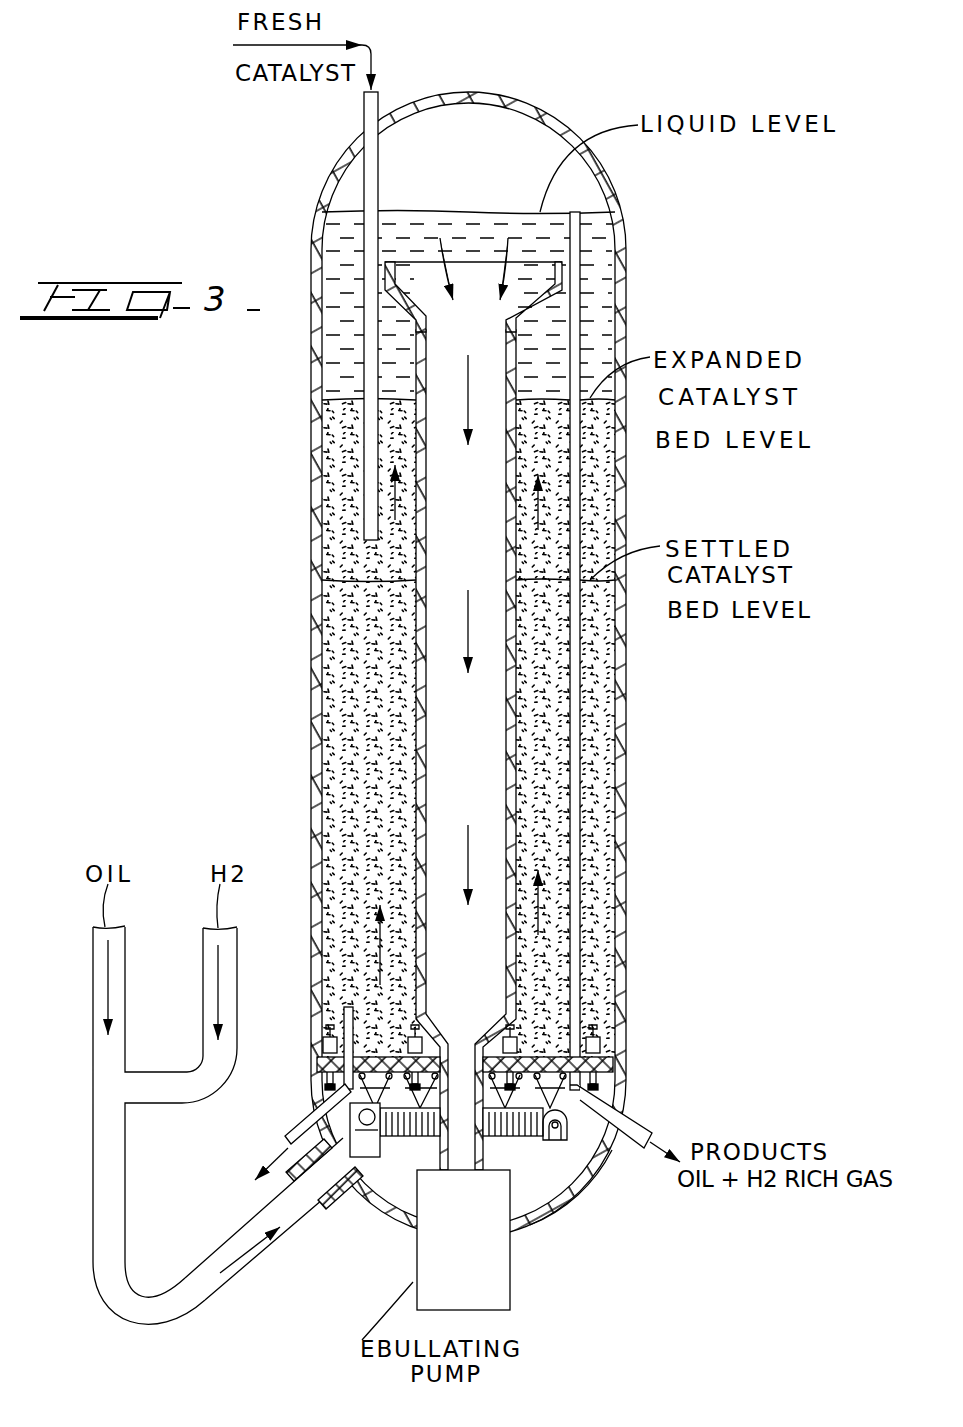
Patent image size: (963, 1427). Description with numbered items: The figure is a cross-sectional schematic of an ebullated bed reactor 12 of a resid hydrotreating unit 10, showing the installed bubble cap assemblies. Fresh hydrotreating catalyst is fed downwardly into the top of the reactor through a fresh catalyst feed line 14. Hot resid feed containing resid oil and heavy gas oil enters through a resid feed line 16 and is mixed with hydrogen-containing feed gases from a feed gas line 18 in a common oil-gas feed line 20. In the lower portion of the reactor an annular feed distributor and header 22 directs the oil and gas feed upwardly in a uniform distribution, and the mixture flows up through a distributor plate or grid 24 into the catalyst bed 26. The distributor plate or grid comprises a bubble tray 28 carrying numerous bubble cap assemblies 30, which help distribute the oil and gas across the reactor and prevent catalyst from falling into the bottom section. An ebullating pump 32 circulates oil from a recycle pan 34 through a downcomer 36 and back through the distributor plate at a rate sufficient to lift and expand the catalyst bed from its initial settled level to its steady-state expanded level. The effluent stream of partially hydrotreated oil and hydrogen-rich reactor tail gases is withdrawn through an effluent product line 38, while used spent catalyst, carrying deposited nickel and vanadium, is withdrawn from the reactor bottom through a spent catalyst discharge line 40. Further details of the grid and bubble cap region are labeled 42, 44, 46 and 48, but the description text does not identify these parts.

The resid hydrotreating unit 10 is at (497, 92).
The ebullated bed reactor 12 is at (628, 225).
The fresh catalyst feed line 14 is at (363, 110).
The resid feed line 16 is at (93, 993).
The feed gas line 18 is at (203, 993).
The common oil-gas feed line 20 is at (248, 1272).
The annular feed distributor and header 22 is at (562, 1178).
The distributor plate or grid 24 is at (378, 1047).
The catalyst bed 26 is at (337, 698).
The bubble tray 28 is at (540, 1047).
The bubble cap assemblies 30 is at (600, 1045).
The ebullating pump 32 is at (510, 1258).
The recycle pan 34 is at (560, 278).
The downcomer 36 is at (416, 773).
The effluent product line 38 is at (622, 1140).
The spent catalyst discharge line 40 is at (308, 1125).
The grid nozzle 42 is at (317, 1062).
The bubble cap 44 is at (323, 1043).
The bubble cap riser 46 is at (597, 1036).
The catalyst withdrawal tube 48 is at (345, 1025).